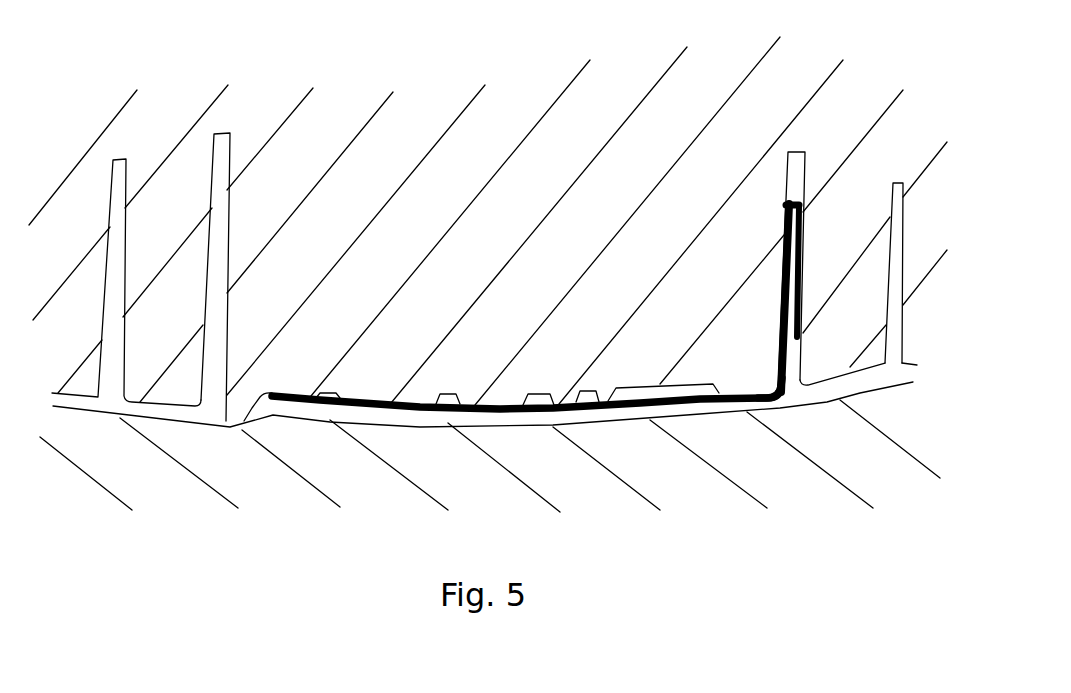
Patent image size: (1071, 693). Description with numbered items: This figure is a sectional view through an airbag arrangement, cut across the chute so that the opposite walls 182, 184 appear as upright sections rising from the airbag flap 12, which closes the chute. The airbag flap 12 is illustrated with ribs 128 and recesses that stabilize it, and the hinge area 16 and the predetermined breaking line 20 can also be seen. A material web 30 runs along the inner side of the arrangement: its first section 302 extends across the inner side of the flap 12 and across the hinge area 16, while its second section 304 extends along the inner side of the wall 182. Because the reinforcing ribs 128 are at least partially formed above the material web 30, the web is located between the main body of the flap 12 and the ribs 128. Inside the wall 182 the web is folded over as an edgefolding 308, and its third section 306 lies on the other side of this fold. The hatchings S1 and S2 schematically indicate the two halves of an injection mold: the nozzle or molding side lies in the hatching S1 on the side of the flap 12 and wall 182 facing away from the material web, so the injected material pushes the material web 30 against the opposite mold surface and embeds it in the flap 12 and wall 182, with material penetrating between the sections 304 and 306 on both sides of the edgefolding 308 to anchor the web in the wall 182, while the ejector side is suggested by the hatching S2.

The airbag flap 12 is at (450, 422).
The hinge area 16 is at (770, 407).
The predetermined breaking line 20 is at (242, 428).
The material web 30 is at (367, 409).
The ribs 128 is at (552, 410).
The wall 182 is at (795, 165).
The wall 184 is at (222, 153).
The first section 302 is at (637, 410).
The second section 304 is at (780, 272).
The third section 306 is at (803, 243).
The edgefolding 308 is at (793, 200).
The hatching S1 is at (438, 143).
The hatching S2 is at (177, 460).